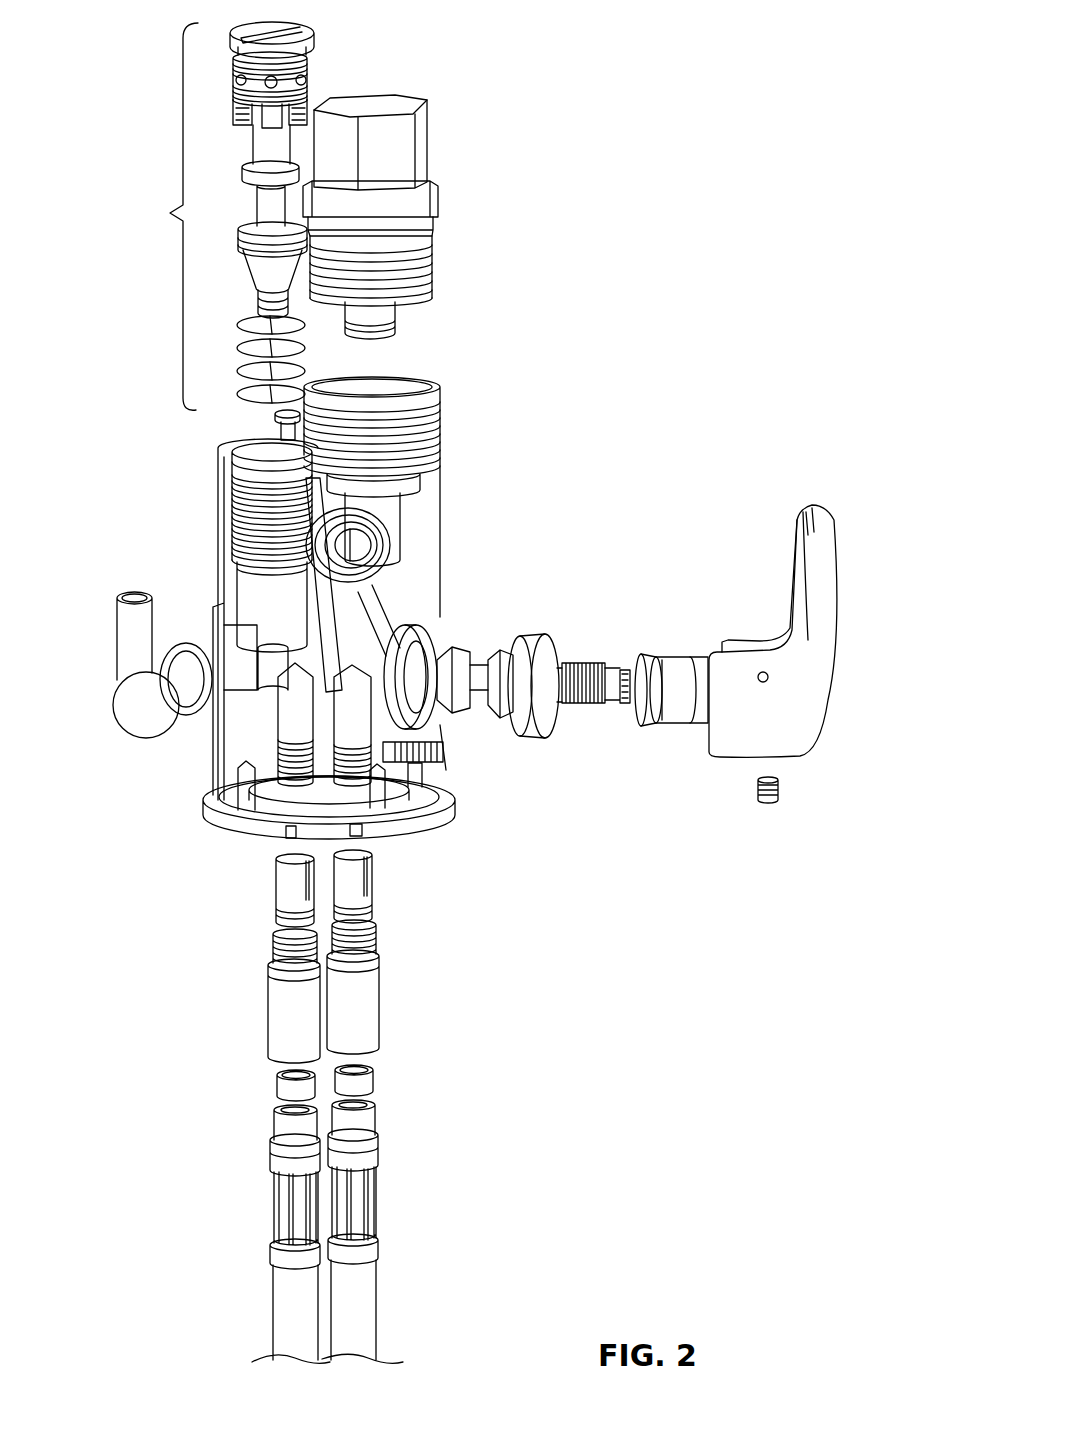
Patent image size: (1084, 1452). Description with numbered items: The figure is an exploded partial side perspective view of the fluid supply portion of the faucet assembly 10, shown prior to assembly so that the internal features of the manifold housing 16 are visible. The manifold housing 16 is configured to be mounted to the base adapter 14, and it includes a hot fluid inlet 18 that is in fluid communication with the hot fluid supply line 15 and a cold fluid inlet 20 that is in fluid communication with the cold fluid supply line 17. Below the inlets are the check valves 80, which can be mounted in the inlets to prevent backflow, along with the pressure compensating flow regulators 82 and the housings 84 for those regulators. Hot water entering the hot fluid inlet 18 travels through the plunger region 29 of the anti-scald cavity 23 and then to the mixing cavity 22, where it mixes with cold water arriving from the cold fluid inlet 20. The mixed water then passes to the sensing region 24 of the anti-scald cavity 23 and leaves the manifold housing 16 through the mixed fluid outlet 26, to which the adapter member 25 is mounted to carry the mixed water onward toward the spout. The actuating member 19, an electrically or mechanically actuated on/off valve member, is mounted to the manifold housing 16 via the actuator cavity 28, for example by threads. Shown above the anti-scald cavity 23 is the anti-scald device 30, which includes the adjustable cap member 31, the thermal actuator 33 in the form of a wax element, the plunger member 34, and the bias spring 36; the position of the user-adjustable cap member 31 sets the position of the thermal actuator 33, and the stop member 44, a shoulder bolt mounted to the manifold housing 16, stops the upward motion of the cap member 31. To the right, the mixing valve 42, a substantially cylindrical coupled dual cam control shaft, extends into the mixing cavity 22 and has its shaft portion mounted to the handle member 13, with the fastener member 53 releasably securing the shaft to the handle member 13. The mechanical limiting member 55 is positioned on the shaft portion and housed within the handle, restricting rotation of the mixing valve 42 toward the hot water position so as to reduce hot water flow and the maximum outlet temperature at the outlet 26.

The faucet assembly 10 is at (439, 41).
The handle member 13 is at (818, 637).
The base adapter 14 is at (330, 745).
The hot fluid supply line 15 is at (282, 1307).
The manifold housing 16 is at (440, 478).
The cold fluid supply line 17 is at (367, 1308).
The hot fluid inlet 18 is at (283, 702).
The actuating member 19 is at (405, 160).
The cold fluid inlet 20 is at (360, 718).
The mixing cavity 22 is at (386, 640).
The anti-scald cavity 23 is at (217, 428).
The sensing region 24 is at (237, 494).
The adapter member 25 is at (135, 713).
The mixed fluid outlet 26 is at (367, 546).
The actuator cavity 28 is at (394, 368).
The plunger region 29 is at (266, 602).
The anti-scald device 30 is at (170, 213).
The adjustable cap member 31 is at (297, 30).
The thermal actuator 33 is at (260, 147).
The plunger member 34 is at (267, 263).
The bias spring 36 is at (285, 342).
The mixing valve 42 is at (534, 759).
The stop member 44 is at (240, 407).
The fastener member 53 is at (768, 803).
The mechanical limiting member 55 is at (683, 668).
The check valve 80 is at (287, 887).
The pressure compensating flow regulator 82 is at (283, 1088).
The housing 84 is at (280, 1012).